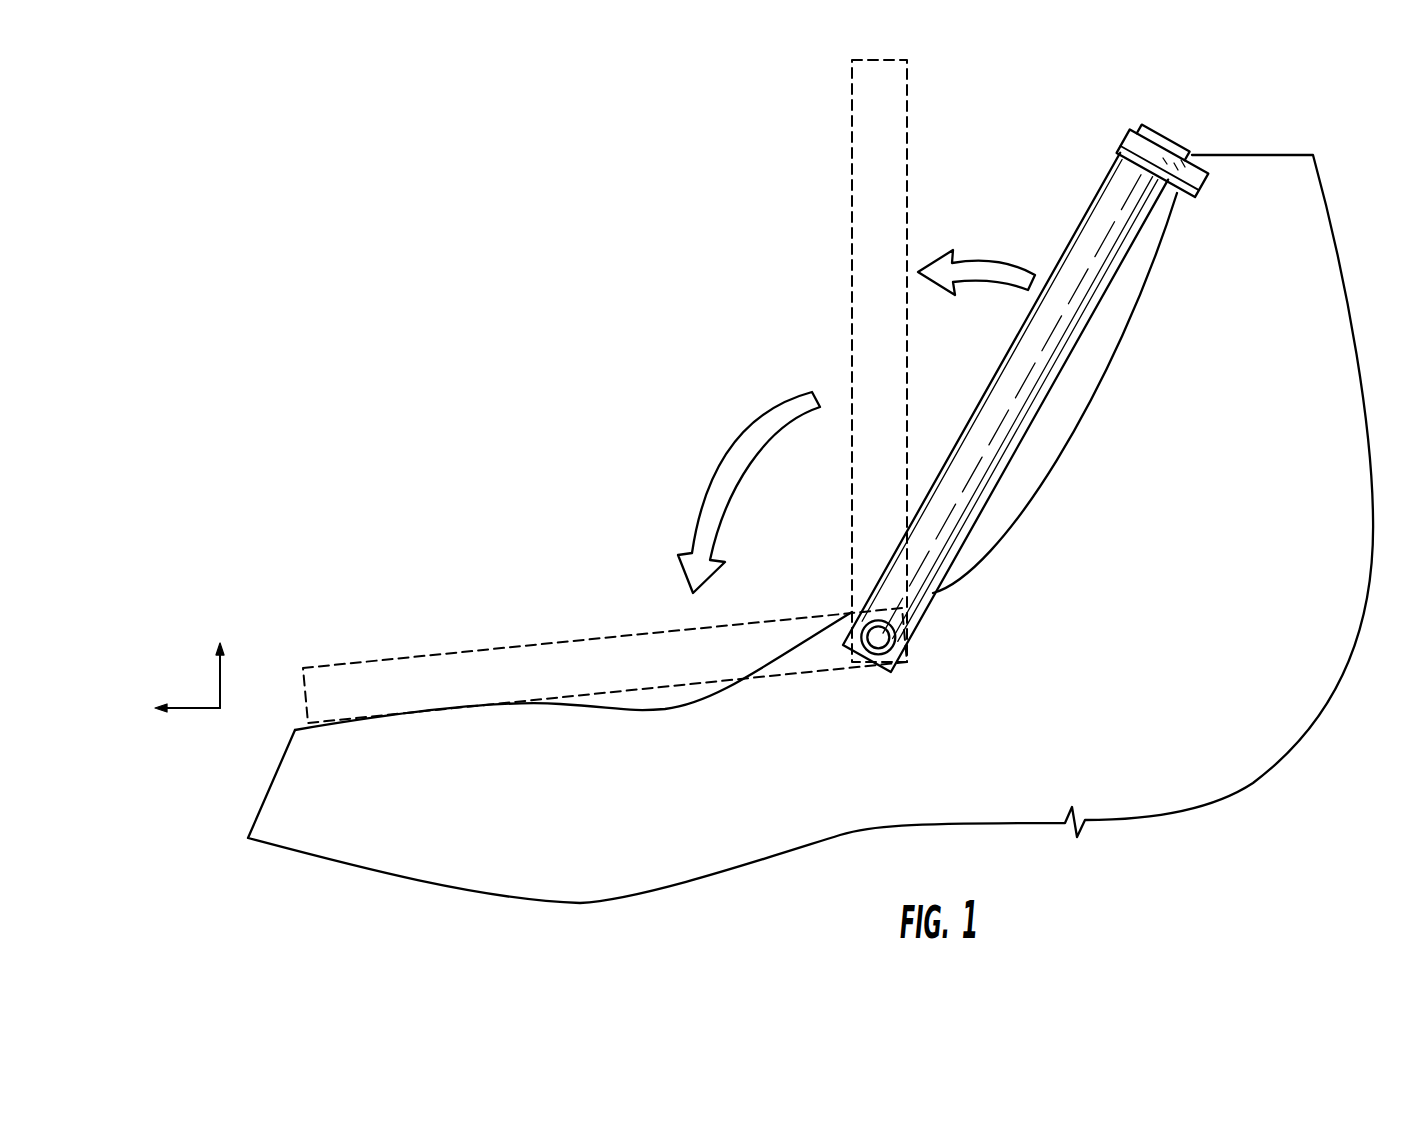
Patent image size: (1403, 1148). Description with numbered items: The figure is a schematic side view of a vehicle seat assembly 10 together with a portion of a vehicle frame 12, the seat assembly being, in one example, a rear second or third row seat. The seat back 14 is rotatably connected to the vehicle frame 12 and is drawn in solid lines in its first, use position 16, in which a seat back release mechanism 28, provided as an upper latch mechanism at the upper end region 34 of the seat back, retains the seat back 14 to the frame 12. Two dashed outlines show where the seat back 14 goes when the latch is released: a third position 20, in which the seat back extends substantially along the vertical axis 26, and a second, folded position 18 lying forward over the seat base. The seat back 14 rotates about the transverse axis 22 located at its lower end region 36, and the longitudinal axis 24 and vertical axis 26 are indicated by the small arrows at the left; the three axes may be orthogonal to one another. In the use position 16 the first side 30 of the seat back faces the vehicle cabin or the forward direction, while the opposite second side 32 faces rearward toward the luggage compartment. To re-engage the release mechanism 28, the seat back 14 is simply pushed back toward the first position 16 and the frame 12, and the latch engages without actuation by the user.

The vehicle seat assembly 10 is at (588, 360).
The vehicle frame 12 is at (1278, 725).
The seat back 14 is at (735, 391).
The first use position 16 is at (1093, 228).
The second folded position 18 is at (443, 652).
The third position 20 is at (852, 137).
The transverse axis 22 is at (882, 640).
The longitudinal axis 24 is at (174, 712).
The vertical axis 26 is at (222, 658).
The seat back release mechanism 28 is at (1155, 153).
The first side 30 is at (852, 265).
The second side 32 is at (907, 212).
The upper end region 34 is at (803, 201).
The lower end region 36 is at (806, 584).